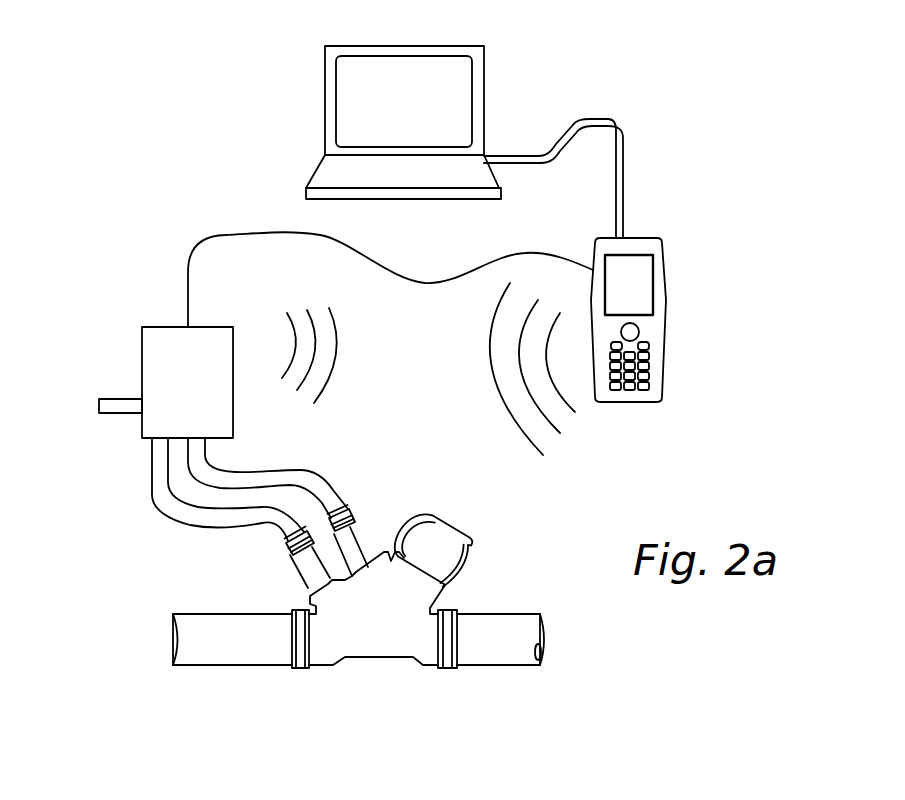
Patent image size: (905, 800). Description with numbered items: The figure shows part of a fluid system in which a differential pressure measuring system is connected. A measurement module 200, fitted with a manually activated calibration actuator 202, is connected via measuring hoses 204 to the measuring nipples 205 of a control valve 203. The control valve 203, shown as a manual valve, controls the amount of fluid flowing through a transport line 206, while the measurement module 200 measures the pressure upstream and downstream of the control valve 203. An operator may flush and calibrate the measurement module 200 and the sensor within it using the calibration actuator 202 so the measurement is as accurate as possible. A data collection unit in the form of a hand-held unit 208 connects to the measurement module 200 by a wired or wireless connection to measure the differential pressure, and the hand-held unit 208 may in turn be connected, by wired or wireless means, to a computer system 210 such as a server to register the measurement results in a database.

The measurement module 200 is at (106, 297).
The manually activated calibration actuator 202 is at (130, 406).
The control valve 203 is at (440, 548).
The measuring hoses 204 is at (305, 485).
The measuring nipples 205 is at (357, 538).
The transport line 206 is at (230, 655).
The hand-held unit 208 is at (660, 308).
The computer system 210 is at (450, 46).